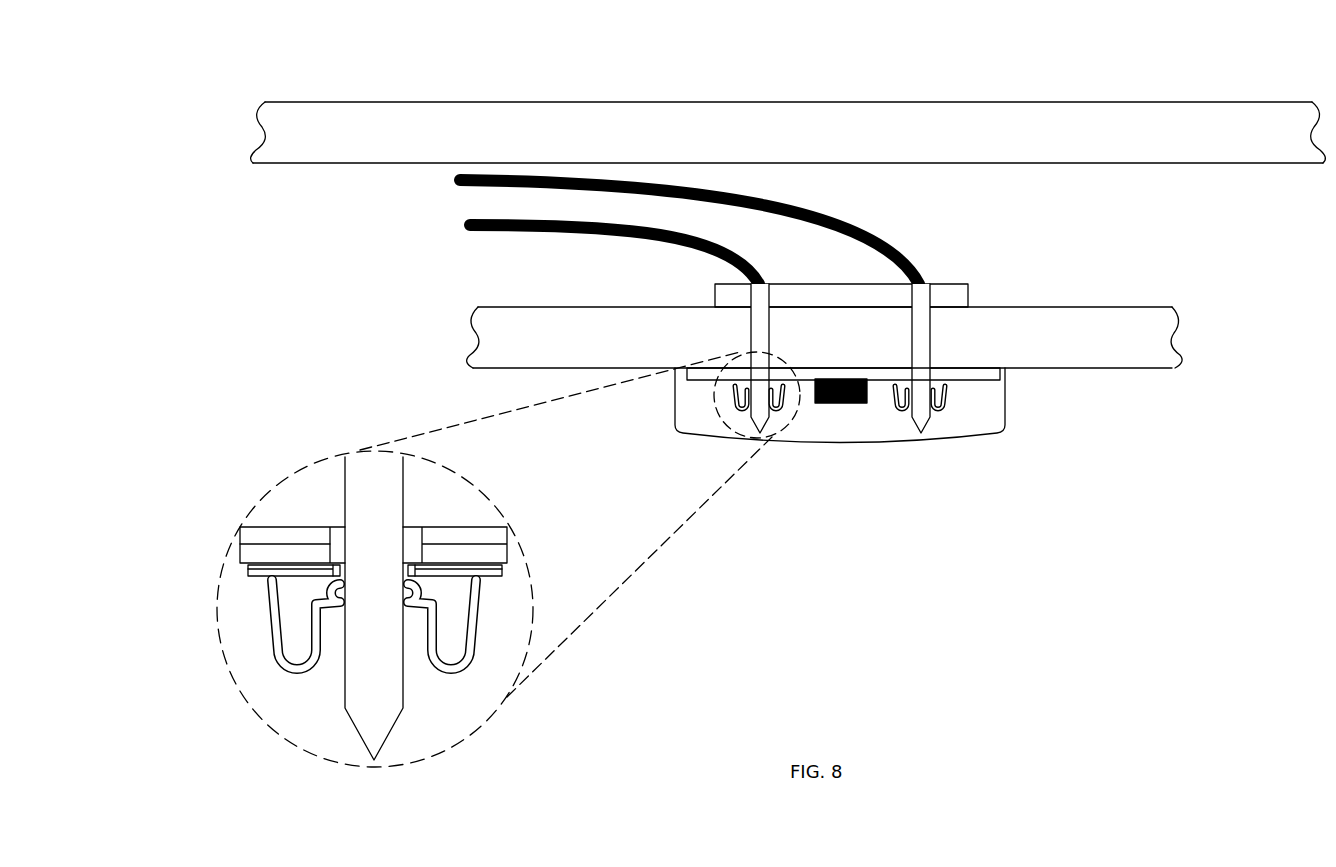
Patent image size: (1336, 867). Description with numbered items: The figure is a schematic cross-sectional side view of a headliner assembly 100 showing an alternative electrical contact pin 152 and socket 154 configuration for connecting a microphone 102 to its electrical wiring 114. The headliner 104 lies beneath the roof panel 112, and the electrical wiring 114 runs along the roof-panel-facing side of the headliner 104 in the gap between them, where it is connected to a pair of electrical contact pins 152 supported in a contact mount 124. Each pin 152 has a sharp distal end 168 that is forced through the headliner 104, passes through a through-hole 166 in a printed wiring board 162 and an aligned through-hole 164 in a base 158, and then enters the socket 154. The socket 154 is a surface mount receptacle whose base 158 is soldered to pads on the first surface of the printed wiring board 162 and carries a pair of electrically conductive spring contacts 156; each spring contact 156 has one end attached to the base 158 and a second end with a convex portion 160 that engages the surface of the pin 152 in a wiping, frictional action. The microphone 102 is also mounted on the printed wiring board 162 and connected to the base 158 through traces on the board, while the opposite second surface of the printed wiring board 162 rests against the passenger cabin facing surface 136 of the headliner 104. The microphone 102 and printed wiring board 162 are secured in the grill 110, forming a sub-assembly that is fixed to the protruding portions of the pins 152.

The headliner assembly 100 is at (435, 263).
The microphone 102 is at (841, 403).
The headliner 104 is at (505, 353).
The grill 110 is at (1005, 403).
The roof panel 112 is at (648, 102).
The electrical wiring 114 is at (542, 230).
The contact mount 124 is at (970, 283).
The passenger cabin facing surface 136 is at (1122, 369).
The electrical contact pin 152 is at (751, 337).
The socket 154 is at (277, 662).
The spring contacts 156 is at (272, 637).
The base 158 is at (256, 578).
The convex portion 160 is at (330, 622).
The printed wiring board 162 is at (1003, 375).
The through-hole 164 is at (248, 570).
The through-hole 166 is at (240, 544).
The sharp distal end 168 is at (921, 434).